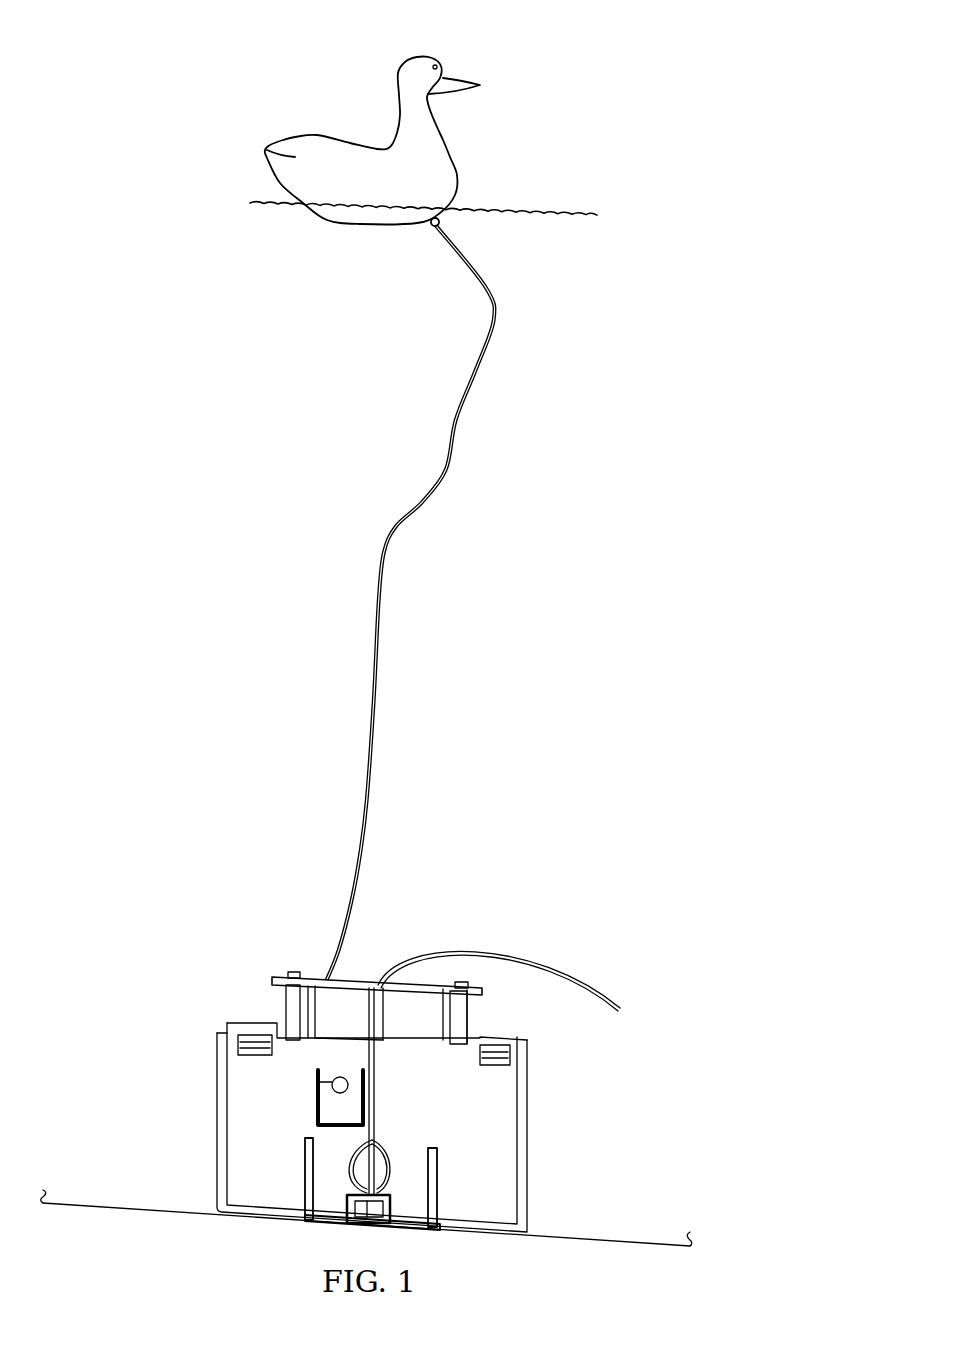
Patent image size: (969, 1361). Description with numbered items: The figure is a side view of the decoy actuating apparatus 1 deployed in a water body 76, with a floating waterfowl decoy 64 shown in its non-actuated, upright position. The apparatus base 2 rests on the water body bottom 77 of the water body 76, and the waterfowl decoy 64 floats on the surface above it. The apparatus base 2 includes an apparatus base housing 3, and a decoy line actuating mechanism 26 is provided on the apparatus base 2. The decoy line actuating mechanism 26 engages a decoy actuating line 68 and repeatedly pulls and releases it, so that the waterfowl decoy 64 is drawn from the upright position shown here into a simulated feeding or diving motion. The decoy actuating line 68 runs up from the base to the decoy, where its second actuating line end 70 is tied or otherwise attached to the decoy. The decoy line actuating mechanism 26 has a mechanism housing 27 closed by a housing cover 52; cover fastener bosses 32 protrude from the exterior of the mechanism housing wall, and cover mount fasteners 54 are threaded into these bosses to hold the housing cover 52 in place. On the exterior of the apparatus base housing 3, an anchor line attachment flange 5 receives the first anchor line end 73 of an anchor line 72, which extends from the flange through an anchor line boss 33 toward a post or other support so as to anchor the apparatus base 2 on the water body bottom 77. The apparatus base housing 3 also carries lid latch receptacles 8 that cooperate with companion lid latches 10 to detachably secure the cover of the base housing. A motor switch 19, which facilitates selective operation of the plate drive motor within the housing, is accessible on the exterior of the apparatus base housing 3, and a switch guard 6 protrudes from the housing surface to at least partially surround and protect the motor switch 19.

The decoy actuating apparatus 1 is at (143, 42).
The apparatus base 2 is at (190, 1035).
The apparatus base housing 3 is at (215, 1123).
The anchor line attachment flange 5 is at (305, 1178).
The switch guard 6 is at (313, 1112).
The lid latch receptacles 8 is at (265, 1063).
The lid latches 10 is at (267, 1035).
The motor switch 19 is at (348, 1078).
The decoy line actuating mechanism 26 is at (232, 947).
The mechanism housing 27 is at (477, 1008).
The cover fastener bosses 32 is at (285, 1000).
The anchor line boss 33 is at (384, 1047).
The housing cover 52 is at (347, 982).
The cover mount fasteners 54 is at (293, 973).
The waterfowl decoy 64 is at (425, 165).
The decoy actuating line 68 is at (497, 317).
The second actuating line end 70 is at (440, 223).
The anchor line 72 is at (570, 980).
The first anchor line end 73 is at (377, 1192).
The water body 76 is at (553, 211).
The water body bottom 77 is at (145, 1210).